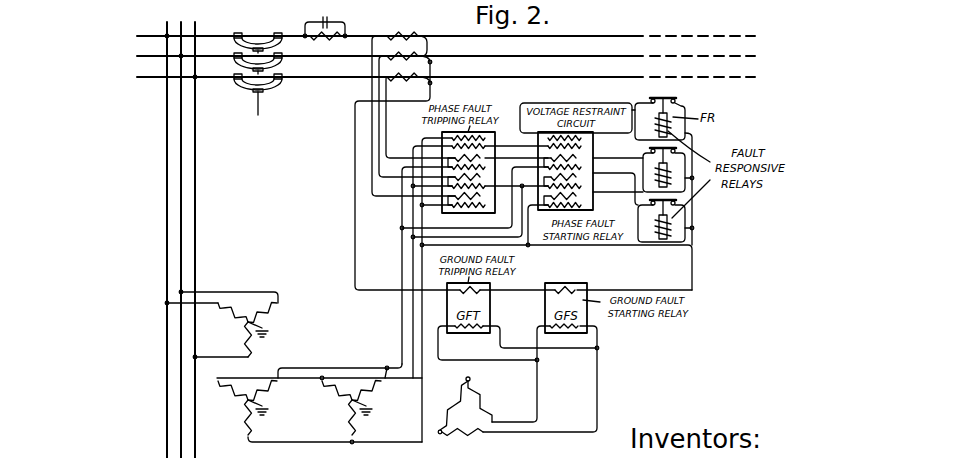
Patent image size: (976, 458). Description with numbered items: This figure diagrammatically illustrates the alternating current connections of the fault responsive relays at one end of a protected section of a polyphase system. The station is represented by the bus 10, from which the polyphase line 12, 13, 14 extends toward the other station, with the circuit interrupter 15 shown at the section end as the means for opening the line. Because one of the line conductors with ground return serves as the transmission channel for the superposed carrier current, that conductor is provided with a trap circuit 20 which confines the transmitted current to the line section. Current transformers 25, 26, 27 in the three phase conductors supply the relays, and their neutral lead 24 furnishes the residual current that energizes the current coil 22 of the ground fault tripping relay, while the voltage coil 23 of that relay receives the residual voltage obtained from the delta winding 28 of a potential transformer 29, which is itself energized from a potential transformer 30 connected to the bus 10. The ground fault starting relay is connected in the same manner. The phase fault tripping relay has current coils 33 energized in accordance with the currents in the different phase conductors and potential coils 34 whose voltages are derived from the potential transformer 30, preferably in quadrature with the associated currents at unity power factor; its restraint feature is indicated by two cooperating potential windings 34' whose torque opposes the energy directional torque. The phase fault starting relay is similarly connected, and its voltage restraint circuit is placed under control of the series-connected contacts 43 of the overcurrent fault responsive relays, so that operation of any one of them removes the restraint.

The bus 10 is at (195, 152).
The polyphase line conductor 12 is at (594, 35).
The polyphase line conductor 13 is at (594, 55).
The polyphase line conductor 14 is at (592, 76).
The circuit interrupter 15 is at (276, 85).
The trap circuit 20 is at (342, 32).
The current coil 22 is at (480, 292).
The voltage coil 23 is at (483, 326).
The neutral lead 24 is at (355, 207).
The current transformer 25 is at (403, 32).
The current transformer 26 is at (418, 52).
The current transformer 27 is at (416, 74).
The delta winding 28 is at (465, 406).
The potential transformer 29 is at (406, 412).
The potential transformer 30 is at (278, 356).
The current coils 33 is at (480, 158).
The potential coils 34 is at (540, 189).
The potential windings 34' is at (535, 135).
The contacts 43 is at (673, 97).